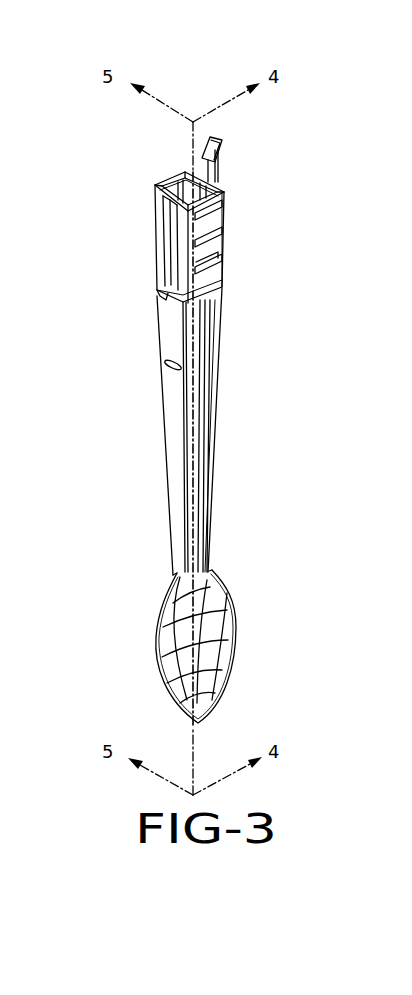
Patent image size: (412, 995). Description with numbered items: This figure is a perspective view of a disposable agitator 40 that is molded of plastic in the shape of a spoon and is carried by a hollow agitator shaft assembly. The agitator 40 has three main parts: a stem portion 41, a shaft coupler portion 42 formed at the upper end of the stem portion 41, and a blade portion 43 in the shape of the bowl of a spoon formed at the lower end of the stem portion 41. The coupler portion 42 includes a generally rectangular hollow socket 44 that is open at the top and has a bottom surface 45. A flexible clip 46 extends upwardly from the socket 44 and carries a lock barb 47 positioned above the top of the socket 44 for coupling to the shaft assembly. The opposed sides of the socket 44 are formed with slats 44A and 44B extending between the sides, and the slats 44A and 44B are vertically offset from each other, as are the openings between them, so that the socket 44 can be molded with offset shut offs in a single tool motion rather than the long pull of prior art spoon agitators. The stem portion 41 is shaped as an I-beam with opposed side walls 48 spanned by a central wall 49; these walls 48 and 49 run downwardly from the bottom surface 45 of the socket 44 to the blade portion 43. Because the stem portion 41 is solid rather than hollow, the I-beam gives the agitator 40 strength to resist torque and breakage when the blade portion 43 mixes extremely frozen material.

The agitator 40 is at (97, 356).
The stem portion 41 is at (229, 370).
The shaft coupler portion 42 is at (240, 199).
The blade portion 43 is at (230, 622).
The hollow socket 44 is at (162, 255).
The slats 44A is at (173, 178).
The slats 44B is at (212, 217).
The bottom surface 45 is at (203, 270).
The flexible clip 46 is at (222, 178).
The lock barb 47 is at (215, 138).
The opposed side walls 48 is at (213, 428).
The central wall 49 is at (193, 397).